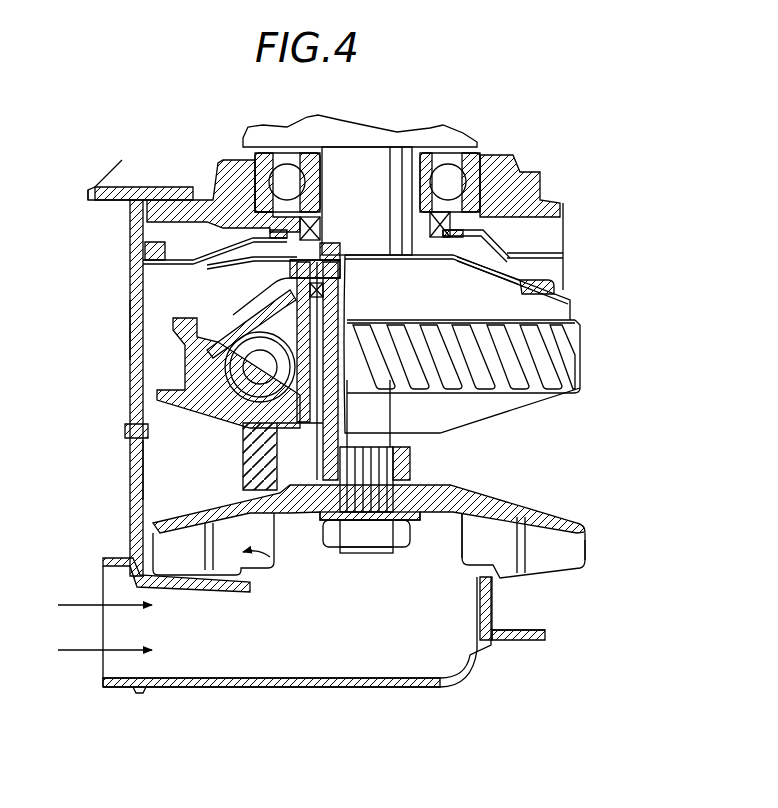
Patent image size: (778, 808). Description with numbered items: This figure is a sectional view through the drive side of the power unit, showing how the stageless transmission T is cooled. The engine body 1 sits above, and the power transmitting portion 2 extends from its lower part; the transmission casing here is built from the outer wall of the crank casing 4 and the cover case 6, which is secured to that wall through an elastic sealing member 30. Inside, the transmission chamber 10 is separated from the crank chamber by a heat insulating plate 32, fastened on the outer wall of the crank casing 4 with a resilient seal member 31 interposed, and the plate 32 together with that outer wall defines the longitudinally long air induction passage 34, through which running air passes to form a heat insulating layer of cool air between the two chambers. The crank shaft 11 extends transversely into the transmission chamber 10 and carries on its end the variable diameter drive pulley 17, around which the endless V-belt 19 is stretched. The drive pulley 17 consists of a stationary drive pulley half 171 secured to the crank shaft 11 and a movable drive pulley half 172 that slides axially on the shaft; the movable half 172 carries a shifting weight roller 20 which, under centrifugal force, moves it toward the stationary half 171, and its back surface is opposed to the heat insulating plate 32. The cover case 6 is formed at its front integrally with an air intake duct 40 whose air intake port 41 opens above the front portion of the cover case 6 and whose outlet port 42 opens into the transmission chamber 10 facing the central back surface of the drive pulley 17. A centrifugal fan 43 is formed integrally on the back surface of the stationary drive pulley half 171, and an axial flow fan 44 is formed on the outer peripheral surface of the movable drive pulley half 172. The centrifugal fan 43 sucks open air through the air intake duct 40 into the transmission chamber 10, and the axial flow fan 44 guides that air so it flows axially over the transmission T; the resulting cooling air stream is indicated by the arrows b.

The engine body 1 is at (100, 205).
The power transmitting portion 2 is at (128, 281).
The crank casing 4 is at (132, 331).
The cover case 6 is at (515, 641).
The transmission chamber 10 is at (204, 451).
The crank shaft 11 is at (372, 204).
The variable diameter drive pulley 17 is at (583, 437).
The endless V-belt 19 is at (252, 466).
The shifting weight roller 20 is at (258, 334).
The elastic sealing member 30 is at (126, 432).
The resilient seal member 31 is at (167, 250).
The heat insulating plate 32 is at (494, 242).
The air induction passage 34 is at (557, 243).
The air intake duct 40 is at (234, 685).
The air intake port 41 is at (537, 195).
The outlet port 42 is at (488, 543).
The centrifugal fan 43 is at (567, 562).
The axial flow fan 44 is at (556, 354).
The stationary drive pulley half 171 is at (500, 503).
The movable drive pulley half 172 is at (515, 418).
The stageless transmission T is at (591, 559).
The cooling air flow b is at (147, 403).